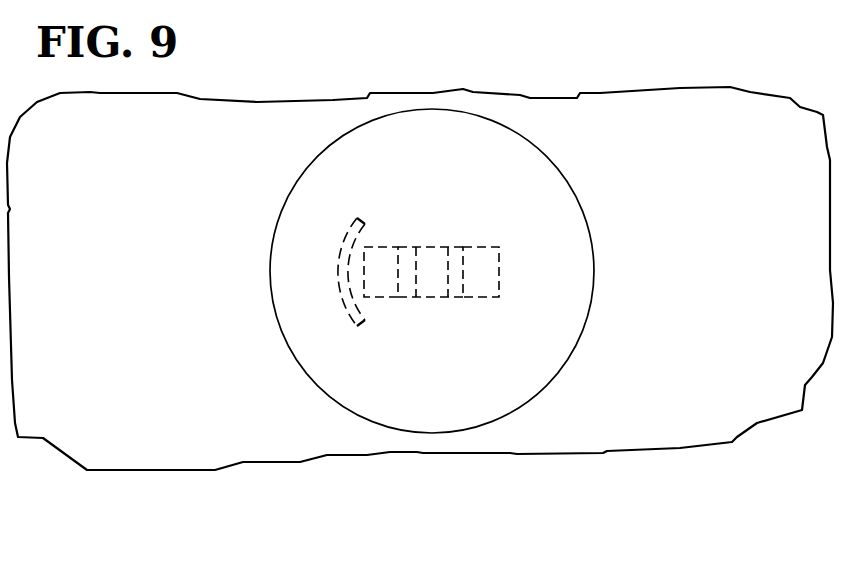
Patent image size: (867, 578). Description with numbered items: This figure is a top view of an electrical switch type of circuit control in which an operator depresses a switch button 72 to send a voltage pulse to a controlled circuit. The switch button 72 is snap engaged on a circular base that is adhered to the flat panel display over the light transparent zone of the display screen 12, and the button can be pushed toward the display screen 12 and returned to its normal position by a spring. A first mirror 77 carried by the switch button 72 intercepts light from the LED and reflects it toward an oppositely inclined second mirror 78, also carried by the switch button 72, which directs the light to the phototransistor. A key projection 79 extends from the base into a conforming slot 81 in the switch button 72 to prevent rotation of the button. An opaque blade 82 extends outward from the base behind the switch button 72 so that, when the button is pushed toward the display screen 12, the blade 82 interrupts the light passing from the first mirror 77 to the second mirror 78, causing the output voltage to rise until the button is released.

The display screen 12 is at (118, 471).
The switch button 72 is at (566, 366).
The first mirror 77 is at (388, 247).
The second mirror 78 is at (490, 247).
The key projection 79 is at (354, 221).
The slot 81 is at (343, 305).
The opaque blade 82 is at (430, 297).